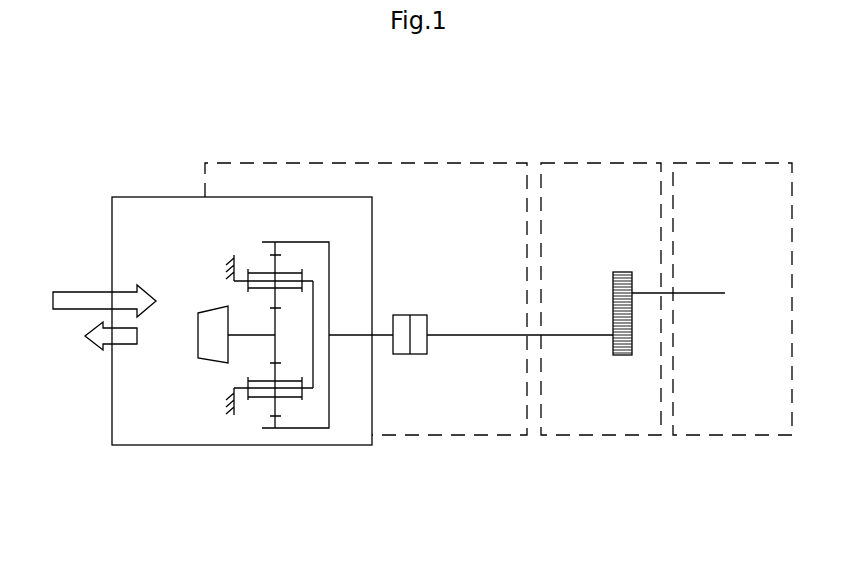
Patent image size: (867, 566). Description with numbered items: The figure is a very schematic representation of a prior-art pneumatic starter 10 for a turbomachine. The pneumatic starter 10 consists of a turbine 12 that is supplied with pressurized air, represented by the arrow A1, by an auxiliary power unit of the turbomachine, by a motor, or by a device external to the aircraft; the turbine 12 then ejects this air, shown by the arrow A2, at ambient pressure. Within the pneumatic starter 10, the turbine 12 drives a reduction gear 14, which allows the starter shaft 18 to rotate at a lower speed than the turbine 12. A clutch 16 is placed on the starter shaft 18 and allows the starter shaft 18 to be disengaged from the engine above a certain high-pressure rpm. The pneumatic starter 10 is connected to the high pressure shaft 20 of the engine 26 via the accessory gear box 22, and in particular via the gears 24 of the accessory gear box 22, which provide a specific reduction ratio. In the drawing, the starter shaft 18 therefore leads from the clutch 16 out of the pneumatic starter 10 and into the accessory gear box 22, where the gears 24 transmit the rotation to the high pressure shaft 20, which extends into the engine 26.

The pneumatic starter 10 is at (368, 163).
The turbine 12 is at (212, 352).
The reduction gear 14 is at (250, 420).
The clutch 16 is at (415, 372).
The starter shaft 18 is at (472, 333).
The high pressure shaft 20 is at (687, 290).
The accessory gear box 22 is at (600, 163).
The gears 24 is at (613, 298).
The engine 26 is at (732, 163).
The arrow representing pressurized air supply A1 is at (75, 300).
The arrow representing air ejection A2 is at (120, 340).